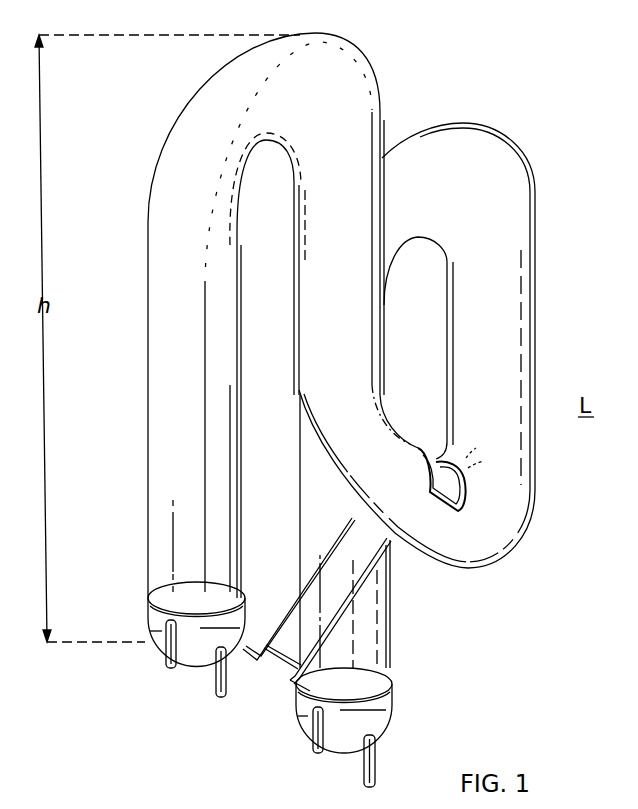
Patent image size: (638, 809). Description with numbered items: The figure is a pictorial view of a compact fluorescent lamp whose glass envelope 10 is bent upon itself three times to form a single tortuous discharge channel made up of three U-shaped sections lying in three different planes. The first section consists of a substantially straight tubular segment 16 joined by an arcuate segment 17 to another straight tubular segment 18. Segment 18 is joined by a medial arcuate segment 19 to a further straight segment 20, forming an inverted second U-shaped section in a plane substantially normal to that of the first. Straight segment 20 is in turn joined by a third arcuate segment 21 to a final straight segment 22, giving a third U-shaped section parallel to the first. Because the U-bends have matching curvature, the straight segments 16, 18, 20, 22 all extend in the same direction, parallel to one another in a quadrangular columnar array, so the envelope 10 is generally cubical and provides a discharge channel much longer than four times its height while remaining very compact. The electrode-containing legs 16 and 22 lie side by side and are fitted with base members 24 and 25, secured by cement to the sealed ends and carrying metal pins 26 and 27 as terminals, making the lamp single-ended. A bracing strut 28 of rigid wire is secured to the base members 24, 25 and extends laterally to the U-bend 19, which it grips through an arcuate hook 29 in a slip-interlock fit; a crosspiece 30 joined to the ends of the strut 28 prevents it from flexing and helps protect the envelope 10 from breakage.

The envelope 10 is at (149, 403).
The straight tubular segment 16 is at (170, 485).
The arcuate segment 17 is at (273, 97).
The straight tubular segment 18 is at (323, 288).
The arcuate segment 19 is at (467, 550).
The straight segment 20 is at (503, 343).
The arcuate segment 21 is at (447, 158).
The straight segment 22 is at (383, 609).
The base member 24 is at (155, 606).
The base member 25 is at (390, 728).
The metal pins 26 is at (215, 694).
The metal pins 27 is at (364, 783).
The strut 28 is at (290, 607).
The arcuate hook 29 is at (428, 474).
The crosspiece 30 is at (287, 660).